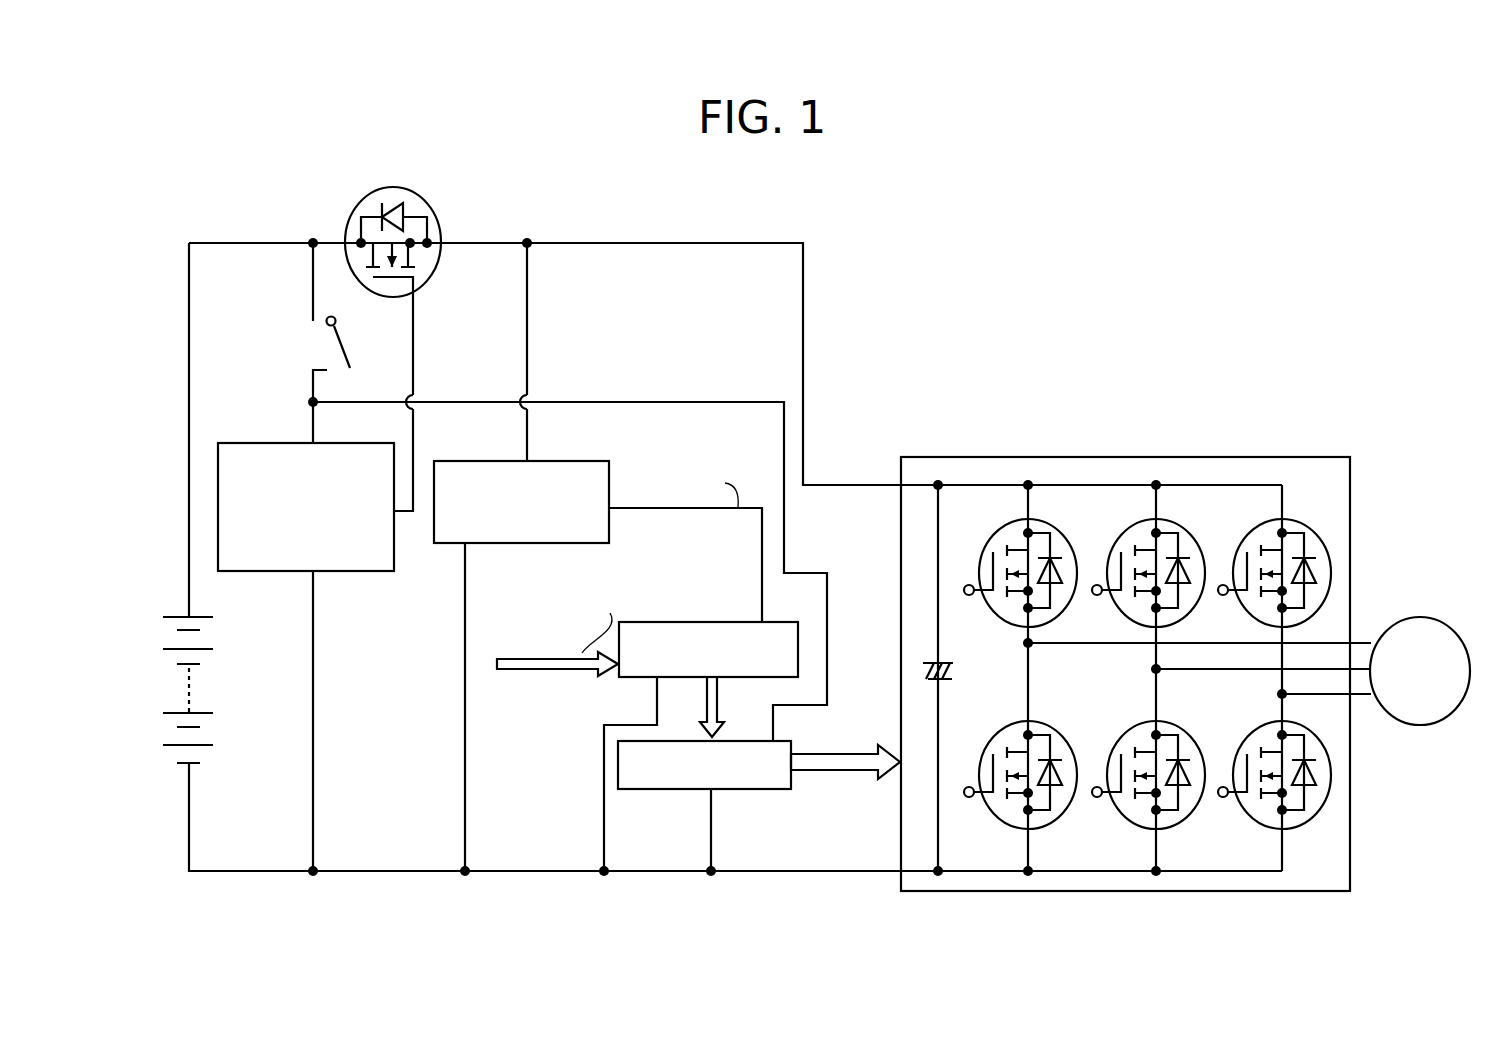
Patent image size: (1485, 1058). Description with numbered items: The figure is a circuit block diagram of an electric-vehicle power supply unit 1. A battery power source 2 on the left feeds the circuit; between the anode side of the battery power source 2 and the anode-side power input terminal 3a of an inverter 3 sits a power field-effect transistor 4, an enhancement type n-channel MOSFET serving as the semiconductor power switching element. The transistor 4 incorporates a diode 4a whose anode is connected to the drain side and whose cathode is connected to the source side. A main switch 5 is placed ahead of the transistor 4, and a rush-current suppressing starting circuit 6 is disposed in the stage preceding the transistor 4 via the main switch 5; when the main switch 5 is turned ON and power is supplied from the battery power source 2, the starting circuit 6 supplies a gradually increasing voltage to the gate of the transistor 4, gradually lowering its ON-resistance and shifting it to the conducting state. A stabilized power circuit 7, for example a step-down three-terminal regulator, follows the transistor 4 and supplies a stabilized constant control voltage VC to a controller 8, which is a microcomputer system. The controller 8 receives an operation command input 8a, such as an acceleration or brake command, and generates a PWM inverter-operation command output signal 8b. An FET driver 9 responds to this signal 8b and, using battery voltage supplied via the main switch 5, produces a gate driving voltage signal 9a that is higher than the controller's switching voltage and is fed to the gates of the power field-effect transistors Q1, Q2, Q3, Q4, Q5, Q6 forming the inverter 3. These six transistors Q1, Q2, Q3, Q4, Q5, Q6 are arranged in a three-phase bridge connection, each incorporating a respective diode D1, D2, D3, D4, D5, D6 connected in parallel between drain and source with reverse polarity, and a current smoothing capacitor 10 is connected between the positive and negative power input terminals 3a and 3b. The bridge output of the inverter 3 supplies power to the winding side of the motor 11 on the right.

The electric-vehicle power supply unit 1 is at (1078, 122).
The battery power source 2 is at (209, 693).
The inverter 3 is at (1103, 457).
The anode-side power input terminal 3a is at (900, 485).
The negative power input terminal 3b is at (897, 872).
The power field-effect transistor 4 is at (355, 210).
The diode 4a is at (392, 202).
The main switch 5 is at (322, 347).
The rush-current suppressing starting circuit 6 is at (279, 443).
The stabilized power circuit 7 is at (435, 523).
The controller 8 is at (723, 622).
The operation command input 8a is at (495, 667).
The inverter-operation command output signal 8b is at (705, 698).
The FET driver 9 is at (782, 792).
The gate driving voltage signal 9a is at (848, 767).
The current smoothing capacitor 10 is at (950, 672).
The motor 11 is at (1403, 725).
The power field-effect transistor Q1 is at (1017, 561).
The power field-effect transistor Q2 is at (1146, 561).
The power field-effect transistor Q3 is at (1265, 561).
The power field-effect transistor Q4 is at (1017, 766).
The power field-effect transistor Q5 is at (1145, 762).
The power field-effect transistor Q6 is at (1269, 761).
The diode D1 is at (1058, 577).
The diode D2 is at (1186, 577).
The diode D3 is at (1312, 577).
The diode D4 is at (1058, 788).
The diode D5 is at (1192, 788).
The diode D6 is at (1310, 795).